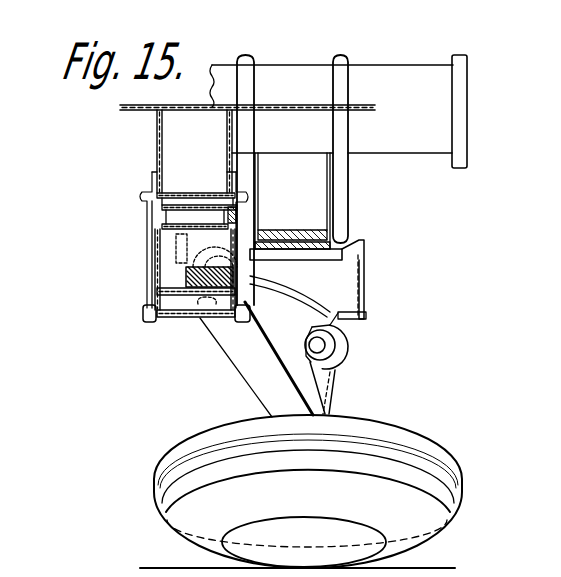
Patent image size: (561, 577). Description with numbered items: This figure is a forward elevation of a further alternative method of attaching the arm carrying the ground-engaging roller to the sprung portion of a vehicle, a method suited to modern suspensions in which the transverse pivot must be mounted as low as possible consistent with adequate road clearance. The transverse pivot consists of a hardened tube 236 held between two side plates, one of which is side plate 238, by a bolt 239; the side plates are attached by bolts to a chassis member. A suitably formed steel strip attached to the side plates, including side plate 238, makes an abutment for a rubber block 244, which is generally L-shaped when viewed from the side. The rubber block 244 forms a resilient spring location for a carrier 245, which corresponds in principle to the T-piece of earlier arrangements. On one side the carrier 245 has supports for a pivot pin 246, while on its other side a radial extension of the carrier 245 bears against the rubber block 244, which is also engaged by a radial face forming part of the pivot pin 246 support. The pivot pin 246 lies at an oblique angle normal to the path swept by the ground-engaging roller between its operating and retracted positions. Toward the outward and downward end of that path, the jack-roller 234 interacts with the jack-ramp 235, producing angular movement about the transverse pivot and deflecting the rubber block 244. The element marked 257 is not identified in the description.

The jack-roller 234 is at (360, 347).
The jack-ramp 235 is at (310, 297).
The hardened tube 236 is at (195, 320).
The side plate 238 is at (247, 295).
The bolt 239 is at (131, 308).
The rubber block 244 is at (185, 281).
The carrier 245 is at (203, 318).
The pivot pin 246 is at (162, 318).
The bracket 257 is at (130, 237).